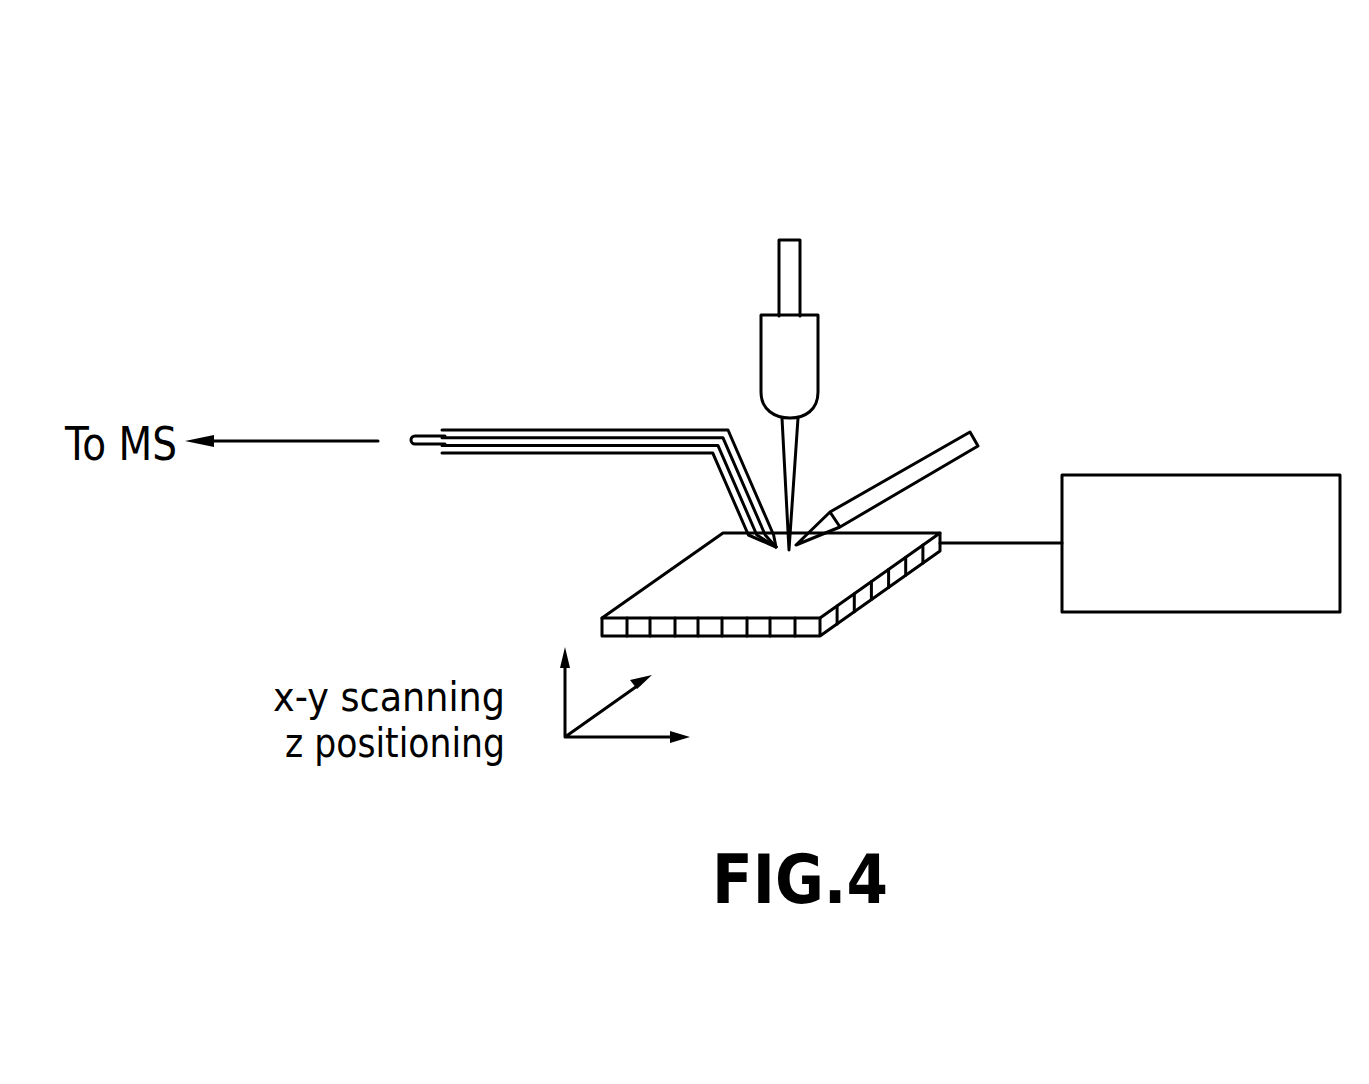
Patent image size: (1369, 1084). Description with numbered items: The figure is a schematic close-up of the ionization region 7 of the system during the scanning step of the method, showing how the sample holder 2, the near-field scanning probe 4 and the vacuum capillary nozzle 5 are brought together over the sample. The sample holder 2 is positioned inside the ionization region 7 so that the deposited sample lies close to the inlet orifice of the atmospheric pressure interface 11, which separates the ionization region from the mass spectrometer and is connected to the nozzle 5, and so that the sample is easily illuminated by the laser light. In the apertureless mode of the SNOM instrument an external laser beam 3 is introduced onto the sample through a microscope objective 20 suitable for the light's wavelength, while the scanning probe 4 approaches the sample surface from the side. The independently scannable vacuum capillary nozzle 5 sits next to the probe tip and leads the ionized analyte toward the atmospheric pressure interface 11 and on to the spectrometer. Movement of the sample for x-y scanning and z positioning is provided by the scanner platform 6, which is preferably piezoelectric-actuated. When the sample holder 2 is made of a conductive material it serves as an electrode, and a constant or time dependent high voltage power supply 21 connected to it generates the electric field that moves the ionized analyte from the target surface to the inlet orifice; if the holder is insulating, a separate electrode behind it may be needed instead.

The sample holder 2 is at (892, 570).
The external laser beam 3 is at (790, 240).
The scanning probe 4 is at (978, 440).
The vacuum capillary nozzle 5 is at (687, 478).
The scanner platform 6 is at (668, 702).
The ionization region 7 is at (847, 573).
The atmospheric pressure interface 11 is at (475, 457).
The microscope objective 20 is at (760, 360).
The high voltage power supply 21 is at (1198, 612).